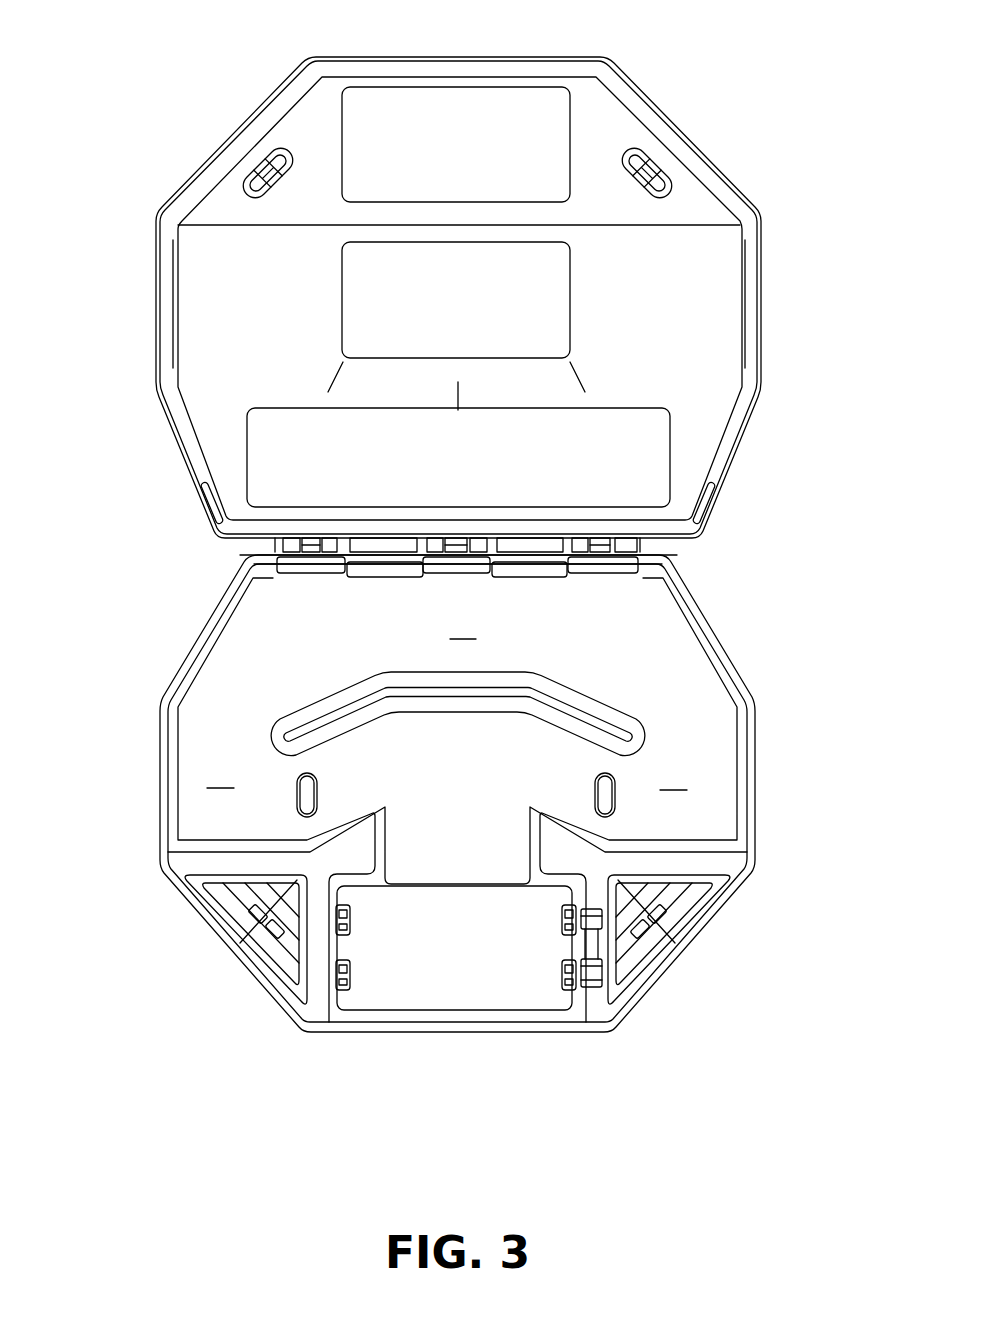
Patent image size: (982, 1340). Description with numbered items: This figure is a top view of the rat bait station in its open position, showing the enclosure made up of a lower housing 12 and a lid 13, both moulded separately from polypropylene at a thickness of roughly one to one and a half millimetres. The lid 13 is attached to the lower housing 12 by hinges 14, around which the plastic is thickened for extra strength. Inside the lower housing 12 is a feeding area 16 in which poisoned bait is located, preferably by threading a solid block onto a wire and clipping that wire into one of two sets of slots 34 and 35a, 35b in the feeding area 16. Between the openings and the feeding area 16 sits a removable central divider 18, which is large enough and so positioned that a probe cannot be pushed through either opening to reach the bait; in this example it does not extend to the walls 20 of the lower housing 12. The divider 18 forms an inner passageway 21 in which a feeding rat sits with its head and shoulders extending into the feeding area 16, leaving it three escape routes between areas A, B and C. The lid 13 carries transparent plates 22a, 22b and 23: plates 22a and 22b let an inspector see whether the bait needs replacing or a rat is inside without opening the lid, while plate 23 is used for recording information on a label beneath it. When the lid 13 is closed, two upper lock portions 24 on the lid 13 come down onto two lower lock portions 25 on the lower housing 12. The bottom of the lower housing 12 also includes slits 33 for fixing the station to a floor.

The lower housing 12 is at (181, 973).
The lid 13 is at (131, 455).
The hinges 14 is at (623, 547).
The feeding area 16 is at (436, 973).
The central divider 18 is at (302, 738).
The walls 20 is at (158, 737).
The inner passageway 21 is at (562, 764).
The transparent plate 22a is at (385, 87).
The transparent plate 22b is at (572, 303).
The transparent plate 23 is at (672, 465).
The upper lock portions 24 is at (250, 173).
The lower lock portions 25 is at (642, 933).
The slits 33 is at (295, 795).
The slots 34 is at (337, 923).
The slots 35a is at (565, 920).
The slots 35b is at (598, 922).